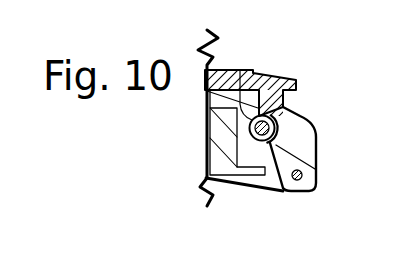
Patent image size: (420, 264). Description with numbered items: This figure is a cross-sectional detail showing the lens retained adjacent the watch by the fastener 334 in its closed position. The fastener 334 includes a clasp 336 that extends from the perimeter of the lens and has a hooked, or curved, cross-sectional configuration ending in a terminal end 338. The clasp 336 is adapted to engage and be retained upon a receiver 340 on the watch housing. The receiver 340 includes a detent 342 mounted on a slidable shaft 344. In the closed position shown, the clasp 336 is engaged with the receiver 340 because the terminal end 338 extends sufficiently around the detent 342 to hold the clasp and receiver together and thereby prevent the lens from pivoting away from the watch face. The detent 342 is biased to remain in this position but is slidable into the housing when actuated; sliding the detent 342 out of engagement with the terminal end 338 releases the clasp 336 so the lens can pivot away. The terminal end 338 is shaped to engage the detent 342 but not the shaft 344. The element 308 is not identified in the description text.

The latch body 308 is at (316, 132).
The frame wall 334 is at (306, 102).
The mounting bracket 336 is at (294, 100).
The aperture 338 is at (316, 169).
The pivot pin 340 is at (268, 151).
The spring wire 342 is at (240, 70).
The support block 344 is at (254, 138).